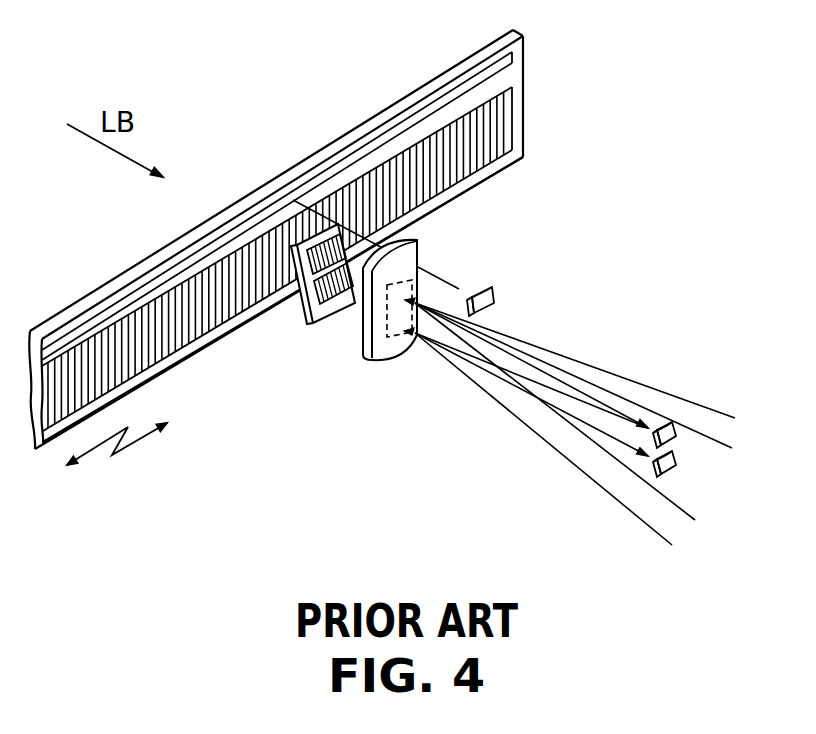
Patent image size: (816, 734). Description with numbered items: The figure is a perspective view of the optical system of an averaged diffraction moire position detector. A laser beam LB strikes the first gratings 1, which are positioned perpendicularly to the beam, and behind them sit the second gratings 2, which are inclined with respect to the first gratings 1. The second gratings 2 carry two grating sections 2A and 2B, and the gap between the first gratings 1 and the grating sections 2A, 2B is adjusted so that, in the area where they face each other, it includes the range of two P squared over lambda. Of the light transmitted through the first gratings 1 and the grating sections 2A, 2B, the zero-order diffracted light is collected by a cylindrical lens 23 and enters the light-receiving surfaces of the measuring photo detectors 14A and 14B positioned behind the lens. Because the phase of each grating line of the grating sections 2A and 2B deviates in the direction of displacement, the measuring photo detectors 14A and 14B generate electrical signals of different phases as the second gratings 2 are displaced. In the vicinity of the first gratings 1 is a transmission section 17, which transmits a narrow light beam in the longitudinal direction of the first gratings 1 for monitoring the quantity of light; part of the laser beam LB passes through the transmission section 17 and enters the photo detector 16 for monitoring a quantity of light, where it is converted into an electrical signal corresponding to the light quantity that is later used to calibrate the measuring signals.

The first gratings 1 is at (510, 120).
The transmission section 17 is at (506, 70).
The second gratings 2 is at (349, 310).
The grating section 2A is at (291, 283).
The grating section 2B is at (323, 327).
The cylindrical lens 23 is at (418, 239).
The photo detector for monitoring a quantity of light 16 is at (496, 292).
The measuring photo detector 14A is at (665, 421).
The measuring photo detector 14B is at (676, 468).